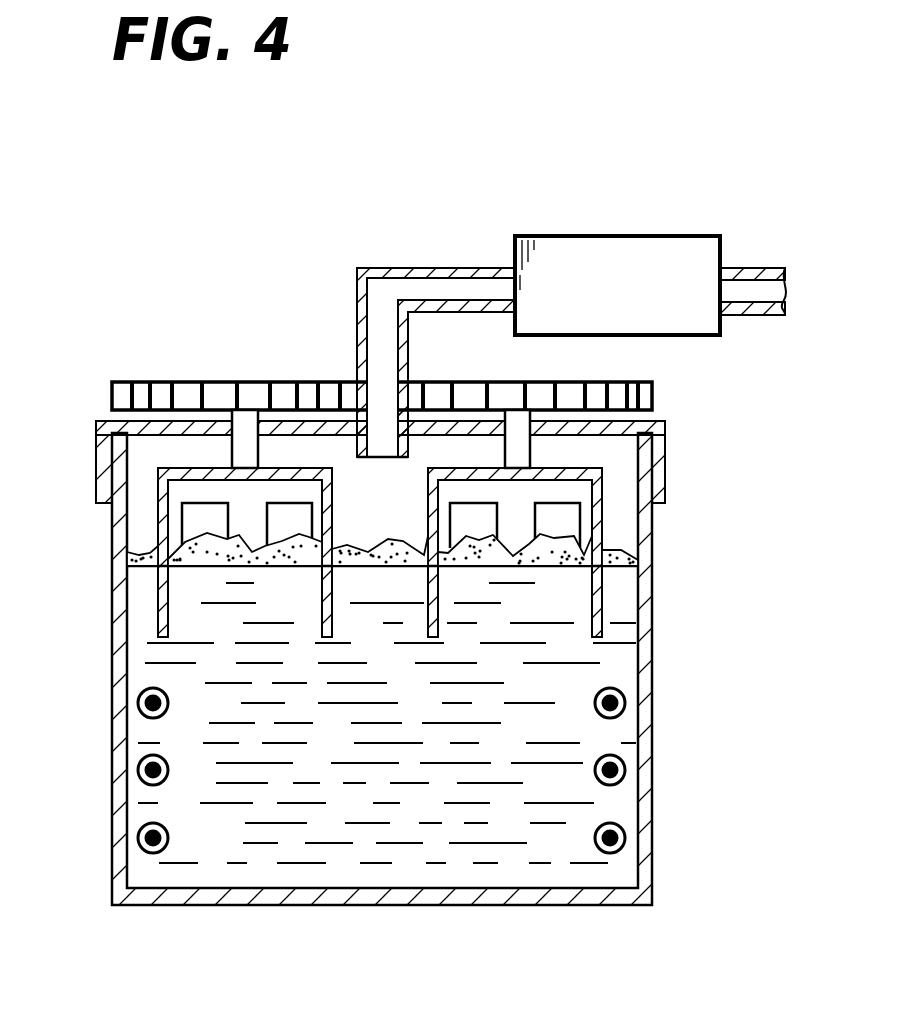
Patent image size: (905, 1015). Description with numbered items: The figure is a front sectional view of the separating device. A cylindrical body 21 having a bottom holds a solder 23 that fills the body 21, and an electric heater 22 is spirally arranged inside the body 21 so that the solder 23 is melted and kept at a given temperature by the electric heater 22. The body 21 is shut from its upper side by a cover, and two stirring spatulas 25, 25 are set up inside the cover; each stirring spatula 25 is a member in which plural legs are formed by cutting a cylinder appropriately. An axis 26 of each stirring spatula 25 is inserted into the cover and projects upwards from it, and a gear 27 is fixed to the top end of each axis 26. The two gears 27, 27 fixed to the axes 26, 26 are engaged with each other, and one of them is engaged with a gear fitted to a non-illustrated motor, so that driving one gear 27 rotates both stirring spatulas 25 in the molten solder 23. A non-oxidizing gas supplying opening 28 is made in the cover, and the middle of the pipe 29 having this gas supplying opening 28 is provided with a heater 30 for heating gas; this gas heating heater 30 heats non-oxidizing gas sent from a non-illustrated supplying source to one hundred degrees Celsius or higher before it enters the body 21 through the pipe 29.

The cylindrical body 21 is at (642, 617).
The electric heater 22 is at (625, 704).
The solder 23 is at (382, 818).
The stirring spatula 25 is at (158, 512).
The axis 26 is at (232, 453).
The gear 27 is at (212, 382).
The non-oxidizing gas supplying opening 28 is at (378, 457).
The pipe 29 is at (418, 268).
The heater for heating gas 30 is at (618, 236).